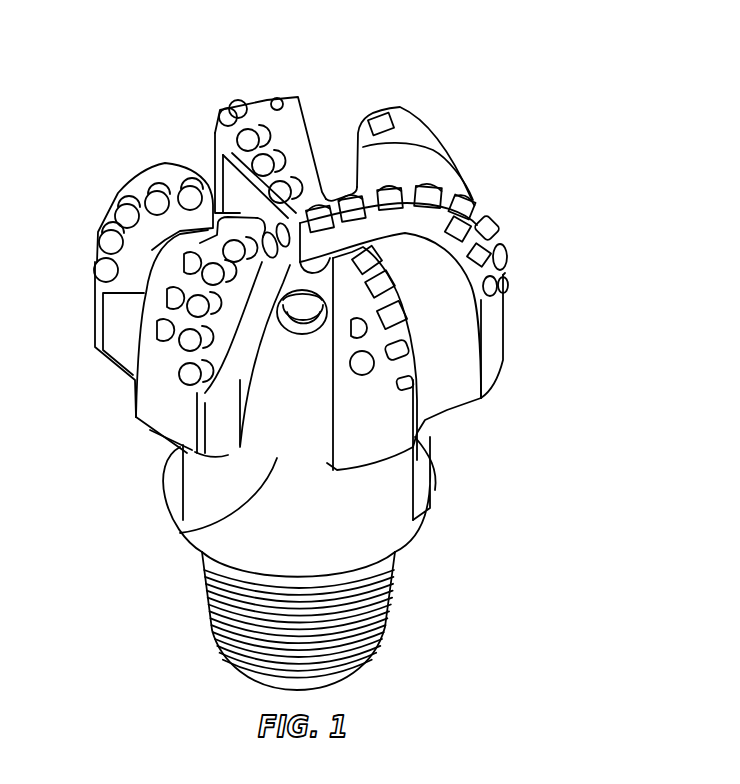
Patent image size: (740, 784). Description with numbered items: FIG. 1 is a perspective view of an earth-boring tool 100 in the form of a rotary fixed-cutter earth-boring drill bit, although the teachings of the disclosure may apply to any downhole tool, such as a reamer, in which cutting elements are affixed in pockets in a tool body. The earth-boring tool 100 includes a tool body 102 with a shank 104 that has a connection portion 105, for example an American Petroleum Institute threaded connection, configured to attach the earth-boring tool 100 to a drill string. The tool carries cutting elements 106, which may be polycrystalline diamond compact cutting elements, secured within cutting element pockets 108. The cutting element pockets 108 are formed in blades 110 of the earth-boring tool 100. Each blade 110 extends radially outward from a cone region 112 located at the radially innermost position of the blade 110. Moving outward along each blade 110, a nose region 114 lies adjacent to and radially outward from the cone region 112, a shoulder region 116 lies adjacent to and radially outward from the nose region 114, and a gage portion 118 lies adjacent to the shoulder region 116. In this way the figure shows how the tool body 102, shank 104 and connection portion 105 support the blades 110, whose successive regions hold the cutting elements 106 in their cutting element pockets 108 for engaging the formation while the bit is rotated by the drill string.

The earth-boring tool 100 is at (565, 83).
The tool body 102 is at (183, 533).
The shank 104 is at (395, 558).
The connection portion 105 is at (384, 627).
The cutting elements 106 is at (230, 113).
The cutting element pockets 108 is at (262, 98).
The blades 110 is at (450, 385).
The cone region 112 is at (334, 215).
The nose region 114 is at (408, 210).
The shoulder region 116 is at (482, 208).
The gage portion 118 is at (495, 340).